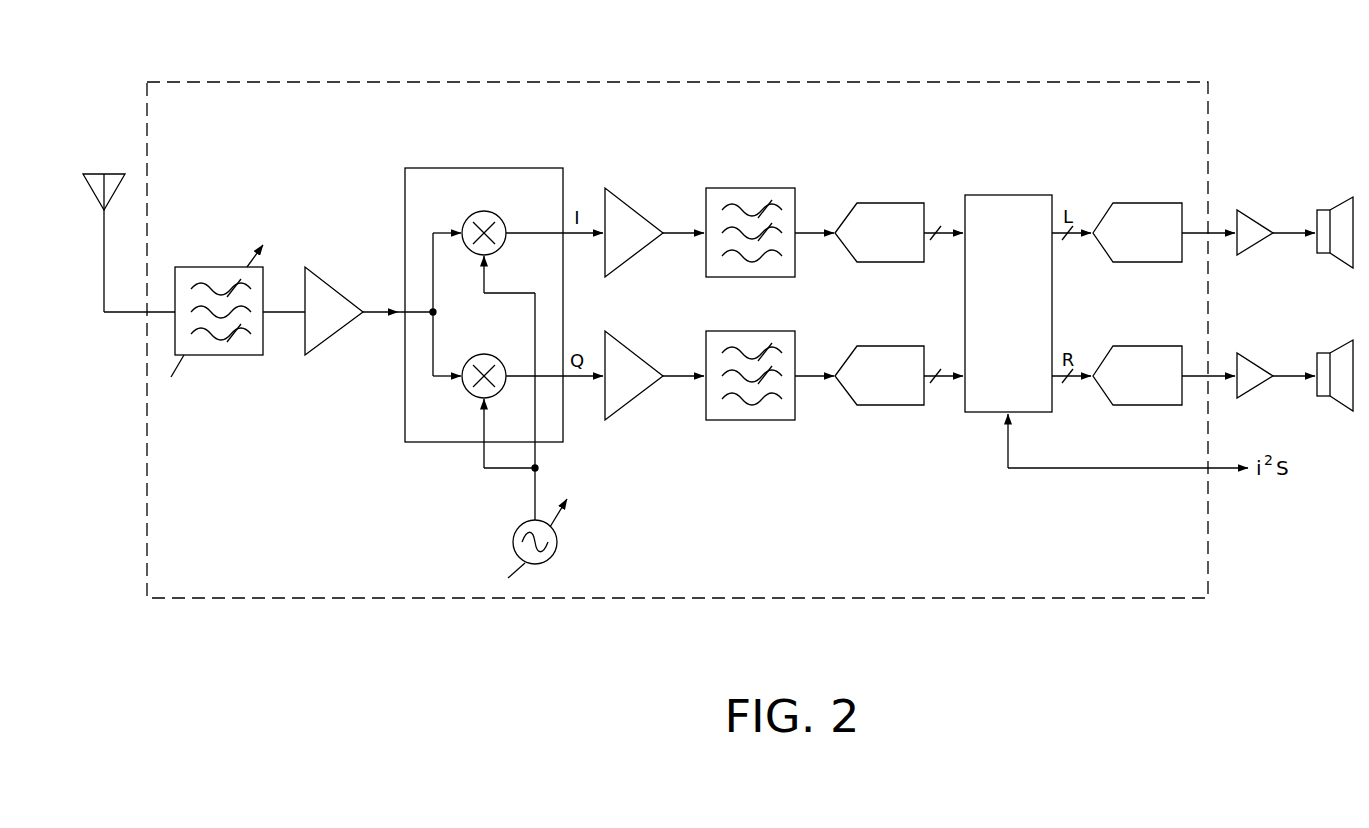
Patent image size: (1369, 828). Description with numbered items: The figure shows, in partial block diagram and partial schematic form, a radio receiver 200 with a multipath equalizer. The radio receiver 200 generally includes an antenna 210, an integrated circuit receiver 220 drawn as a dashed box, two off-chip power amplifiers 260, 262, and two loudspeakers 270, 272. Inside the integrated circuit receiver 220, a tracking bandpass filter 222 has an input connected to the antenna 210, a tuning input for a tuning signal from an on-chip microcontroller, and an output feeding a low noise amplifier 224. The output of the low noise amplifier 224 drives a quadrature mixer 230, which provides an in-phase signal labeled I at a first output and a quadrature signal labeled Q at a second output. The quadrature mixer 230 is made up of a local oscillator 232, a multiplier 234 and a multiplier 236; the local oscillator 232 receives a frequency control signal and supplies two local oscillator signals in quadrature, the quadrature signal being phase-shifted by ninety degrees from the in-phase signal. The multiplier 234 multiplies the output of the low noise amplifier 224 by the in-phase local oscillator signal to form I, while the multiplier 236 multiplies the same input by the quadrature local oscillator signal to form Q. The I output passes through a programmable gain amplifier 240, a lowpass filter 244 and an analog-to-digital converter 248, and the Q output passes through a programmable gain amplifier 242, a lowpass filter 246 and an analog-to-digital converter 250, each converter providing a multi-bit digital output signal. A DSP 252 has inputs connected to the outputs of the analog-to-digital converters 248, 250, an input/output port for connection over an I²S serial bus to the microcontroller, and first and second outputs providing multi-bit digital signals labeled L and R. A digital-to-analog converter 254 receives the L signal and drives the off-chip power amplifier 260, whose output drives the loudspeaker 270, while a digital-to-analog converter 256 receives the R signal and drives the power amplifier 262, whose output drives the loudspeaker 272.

The radio receiver 200 is at (608, 669).
The antenna 210 is at (104, 261).
The integrated circuit receiver 220 is at (499, 82).
The tracking bandpass filter 222 is at (204, 267).
The low noise amplifier 224 is at (334, 284).
The quadrature mixer 230 is at (476, 286).
The local oscillator 232 is at (512, 539).
The multiplier 234 is at (499, 214).
The multiplier 236 is at (491, 355).
The programmable gain amplifier 240 is at (636, 211).
The programmable gain amplifier 242 is at (636, 355).
The lowpass filter 244 is at (751, 188).
The lowpass filter 246 is at (751, 331).
The analog-to-digital converter 248 is at (891, 203).
The analog-to-digital converter 250 is at (891, 346).
The DSP 252 is at (1009, 195).
The digital-to-analog converter 254 is at (1149, 203).
The digital-to-analog converter 256 is at (1149, 346).
The power amplifier 260 is at (1256, 222).
The power amplifier 262 is at (1256, 365).
The loudspeaker 270 is at (1338, 206).
The loudspeaker 272 is at (1338, 349).